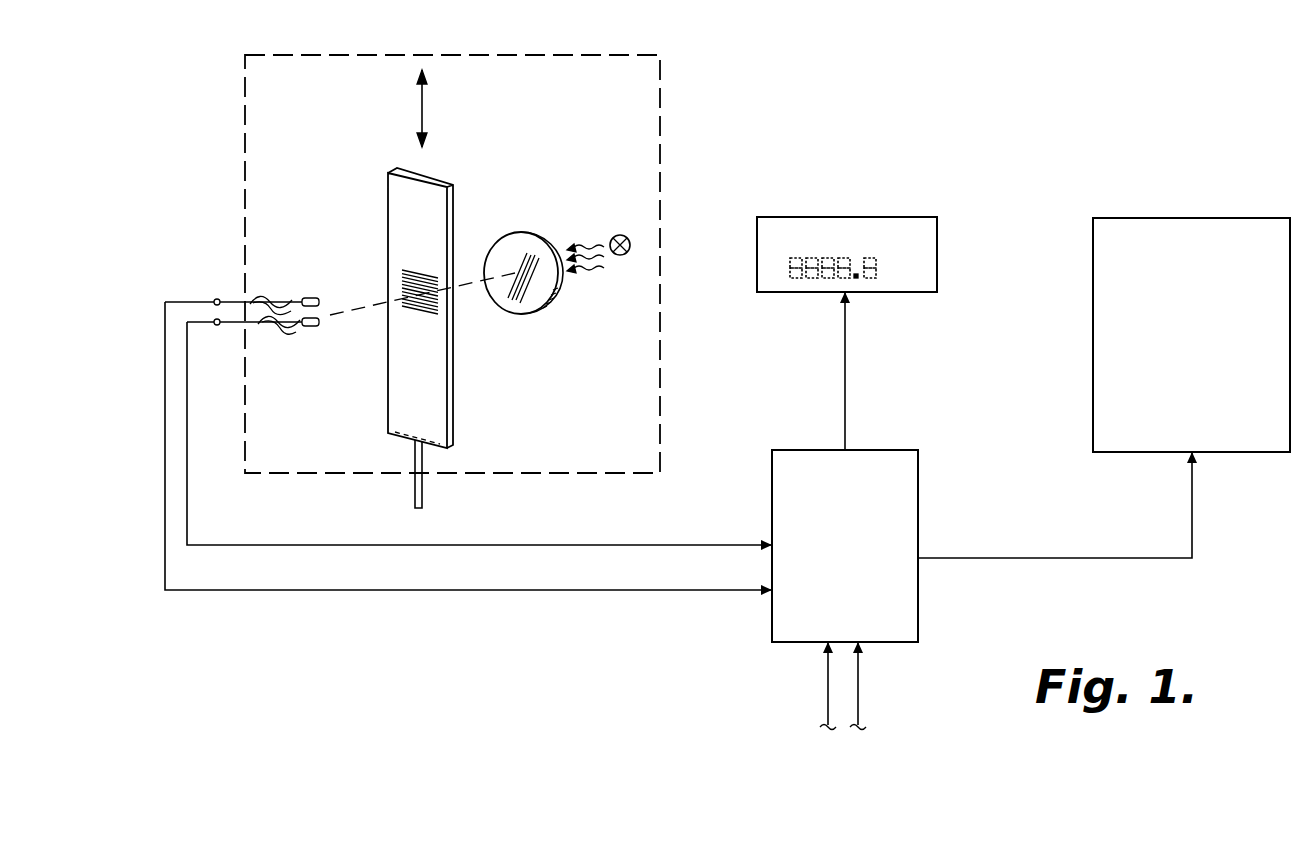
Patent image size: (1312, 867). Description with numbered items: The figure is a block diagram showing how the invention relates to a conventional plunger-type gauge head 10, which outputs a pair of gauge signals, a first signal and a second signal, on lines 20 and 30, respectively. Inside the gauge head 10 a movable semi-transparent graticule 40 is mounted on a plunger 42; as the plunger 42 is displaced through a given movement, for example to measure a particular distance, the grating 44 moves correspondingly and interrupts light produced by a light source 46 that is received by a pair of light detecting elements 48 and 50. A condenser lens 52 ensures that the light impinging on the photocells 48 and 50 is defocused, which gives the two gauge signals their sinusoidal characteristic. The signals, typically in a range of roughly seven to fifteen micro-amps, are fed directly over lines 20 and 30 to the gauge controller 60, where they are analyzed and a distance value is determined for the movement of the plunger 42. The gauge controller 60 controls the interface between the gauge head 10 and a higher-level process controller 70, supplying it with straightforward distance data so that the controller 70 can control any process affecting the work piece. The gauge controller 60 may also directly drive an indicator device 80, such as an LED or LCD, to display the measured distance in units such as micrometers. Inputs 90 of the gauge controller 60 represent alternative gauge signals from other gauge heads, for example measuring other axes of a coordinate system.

The gauge head 10 is at (662, 96).
The line 20 is at (486, 591).
The line 30 is at (486, 544).
The semi-transparent graticule 40 is at (434, 180).
The plunger 42 is at (415, 492).
The grating 44 is at (427, 270).
The light source 46 is at (618, 234).
The light detecting element 48 is at (309, 297).
The light detecting element 50 is at (313, 328).
The condenser lens 52 is at (535, 313).
The gauge controller 60 is at (920, 484).
The higher-level process controller 70 is at (1155, 218).
The indicator device 80 is at (860, 216).
The inputs 90 is at (826, 685).